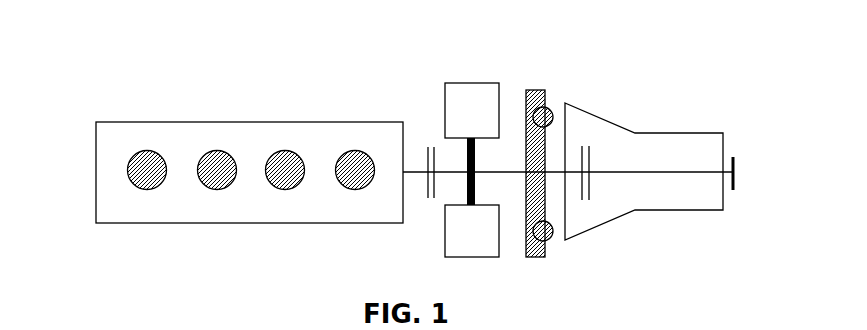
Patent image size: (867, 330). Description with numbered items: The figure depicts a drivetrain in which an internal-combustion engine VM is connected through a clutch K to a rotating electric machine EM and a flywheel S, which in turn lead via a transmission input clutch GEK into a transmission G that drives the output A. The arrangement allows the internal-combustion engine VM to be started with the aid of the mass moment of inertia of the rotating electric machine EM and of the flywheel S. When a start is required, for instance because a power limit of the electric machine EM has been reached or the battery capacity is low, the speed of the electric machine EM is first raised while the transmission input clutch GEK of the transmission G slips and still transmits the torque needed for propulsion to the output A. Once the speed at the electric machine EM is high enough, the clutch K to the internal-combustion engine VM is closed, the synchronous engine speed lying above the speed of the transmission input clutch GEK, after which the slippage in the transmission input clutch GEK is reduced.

The internal-combustion engine VM is at (100, 168).
The clutch K is at (430, 146).
The electric machine EM is at (472, 170).
The flywheel S is at (536, 89).
The transmission input clutch GEK is at (582, 146).
The transmission G is at (688, 202).
The output A is at (735, 176).